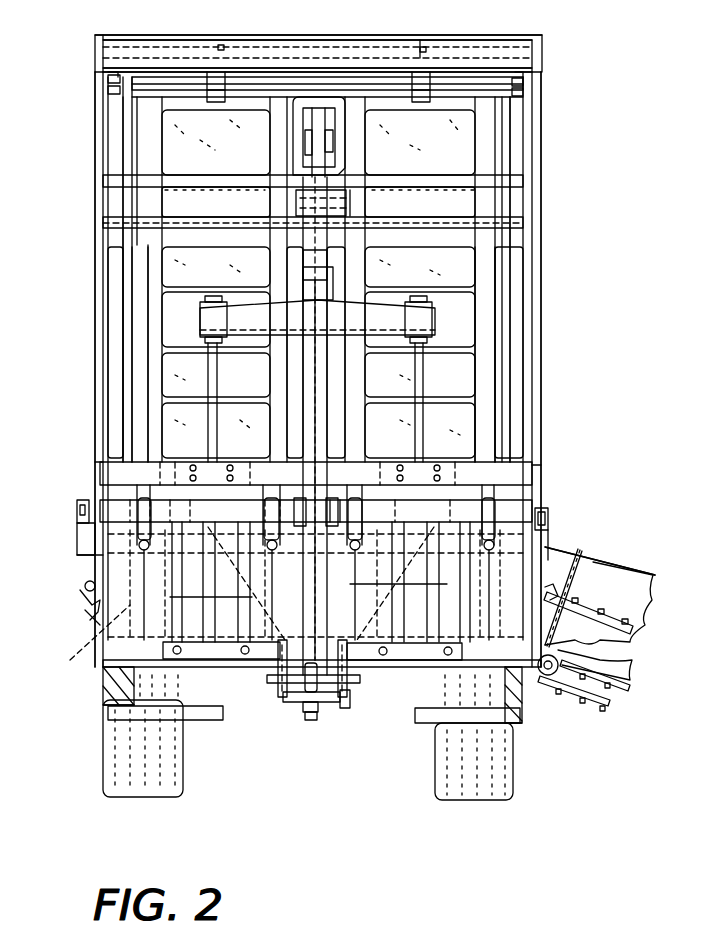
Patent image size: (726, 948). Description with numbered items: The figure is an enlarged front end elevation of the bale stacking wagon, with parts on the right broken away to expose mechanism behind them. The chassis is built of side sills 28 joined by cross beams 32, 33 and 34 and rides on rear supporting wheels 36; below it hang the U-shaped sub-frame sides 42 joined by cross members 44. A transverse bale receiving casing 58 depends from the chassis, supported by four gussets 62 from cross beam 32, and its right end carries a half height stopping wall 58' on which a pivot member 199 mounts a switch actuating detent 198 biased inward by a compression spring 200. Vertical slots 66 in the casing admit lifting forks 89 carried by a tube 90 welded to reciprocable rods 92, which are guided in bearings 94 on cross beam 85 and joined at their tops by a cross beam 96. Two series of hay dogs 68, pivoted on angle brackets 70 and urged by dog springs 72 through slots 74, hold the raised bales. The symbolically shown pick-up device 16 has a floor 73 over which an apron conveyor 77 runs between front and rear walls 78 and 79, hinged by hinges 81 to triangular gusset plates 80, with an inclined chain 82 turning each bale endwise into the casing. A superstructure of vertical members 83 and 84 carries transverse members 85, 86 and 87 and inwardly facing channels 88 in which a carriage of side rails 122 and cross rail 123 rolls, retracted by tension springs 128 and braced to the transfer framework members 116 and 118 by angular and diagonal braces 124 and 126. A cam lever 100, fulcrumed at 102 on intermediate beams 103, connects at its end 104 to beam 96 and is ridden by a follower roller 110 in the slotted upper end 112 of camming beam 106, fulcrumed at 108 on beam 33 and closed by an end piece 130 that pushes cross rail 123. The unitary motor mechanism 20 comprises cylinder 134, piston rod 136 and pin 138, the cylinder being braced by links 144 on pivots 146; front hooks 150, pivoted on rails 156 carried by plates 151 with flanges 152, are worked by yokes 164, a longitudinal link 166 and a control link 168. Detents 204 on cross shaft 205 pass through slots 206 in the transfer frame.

The pick-up device 16 is at (618, 740).
The unitary motor mechanism 20 is at (358, 794).
The side rails or sills 28 is at (80, 500).
The cross beam 32 is at (77, 528).
The cross beam 33 is at (316, 498).
The cross beam 34 is at (316, 511).
The supporting wheels 36 is at (103, 740).
The sides of depending sub-frame 42 is at (103, 695).
The cross members 44 is at (205, 720).
The bale receiving and supporting casing 58 is at (65, 548).
The bale stopping half height wall 58' is at (78, 640).
The gussets 62 is at (315, 585).
The slots 66 is at (180, 597).
The hay dogs 68 is at (143, 485).
The angle brackets 70 is at (145, 478).
The dog springs 72 is at (144, 550).
The bottom floor 73 is at (612, 690).
The slots 74 is at (144, 498).
The apron type conveyor 77 is at (575, 708).
The front side wall 78 is at (615, 660).
The rear side wall 79 is at (620, 580).
The triangular gusset plates 80 is at (578, 548).
The hinges 81 is at (592, 566).
The bale end and side engaging chain 82 is at (600, 604).
The vertical side members 83 is at (532, 370).
The vertical side members 84 is at (95, 382).
The transverse frame member 85 is at (95, 465).
The transverse frame member 86 is at (285, 35).
The transverse frame member 87 is at (175, 42).
The channel members 88 is at (110, 72).
The lifting forks 89 is at (242, 655).
The fork supporting tube 90 is at (173, 662).
The vertically reciprocable rods 92 is at (215, 395).
The aligning bearings 94 is at (210, 462).
The vertically reciprocable cross beam 96 is at (372, 326).
The cam lever 100 is at (325, 126).
The fulcrum 102 is at (348, 205).
The intermediate cross beams 103 is at (410, 198).
The end of cam lever 104 is at (340, 278).
The camming beam 106 is at (345, 365).
The fulcrum 108 is at (332, 498).
The cam follower roller 110 is at (333, 145).
The slotted upper end 112 is at (300, 135).
The transfer framework member 116 is at (480, 152).
The transfer framework member 118 is at (185, 240).
The carriage side rails 122 is at (108, 79).
The carriage cross rail 123 is at (330, 72).
The angular braces 124 is at (258, 100).
The diagonal braces 126 is at (132, 152).
The adjustable tension springs 128 is at (108, 92).
The end piece 130 is at (297, 112).
The cylinder 134 is at (312, 692).
The piston rod 136 is at (290, 702).
The piston rod pin 138 is at (268, 683).
The oscillatable links 144 is at (262, 588).
The pivots 146 is at (462, 488).
The front duplex hooks 150 is at (372, 585).
The supporting plates 151 is at (152, 670).
The flanges 152 is at (103, 680).
The narrow rails 156 is at (278, 690).
The operating yokes 164 is at (306, 712).
The longitudinal link 166 is at (311, 720).
The link 168 is at (348, 708).
The bale responsive switch actuating detent 198 is at (80, 600).
The pivot member 199 is at (85, 586).
The compression spring 200 is at (85, 618).
The detents 204 is at (224, 47).
The cross shaft 205 is at (410, 47).
The slots 206 is at (210, 102).